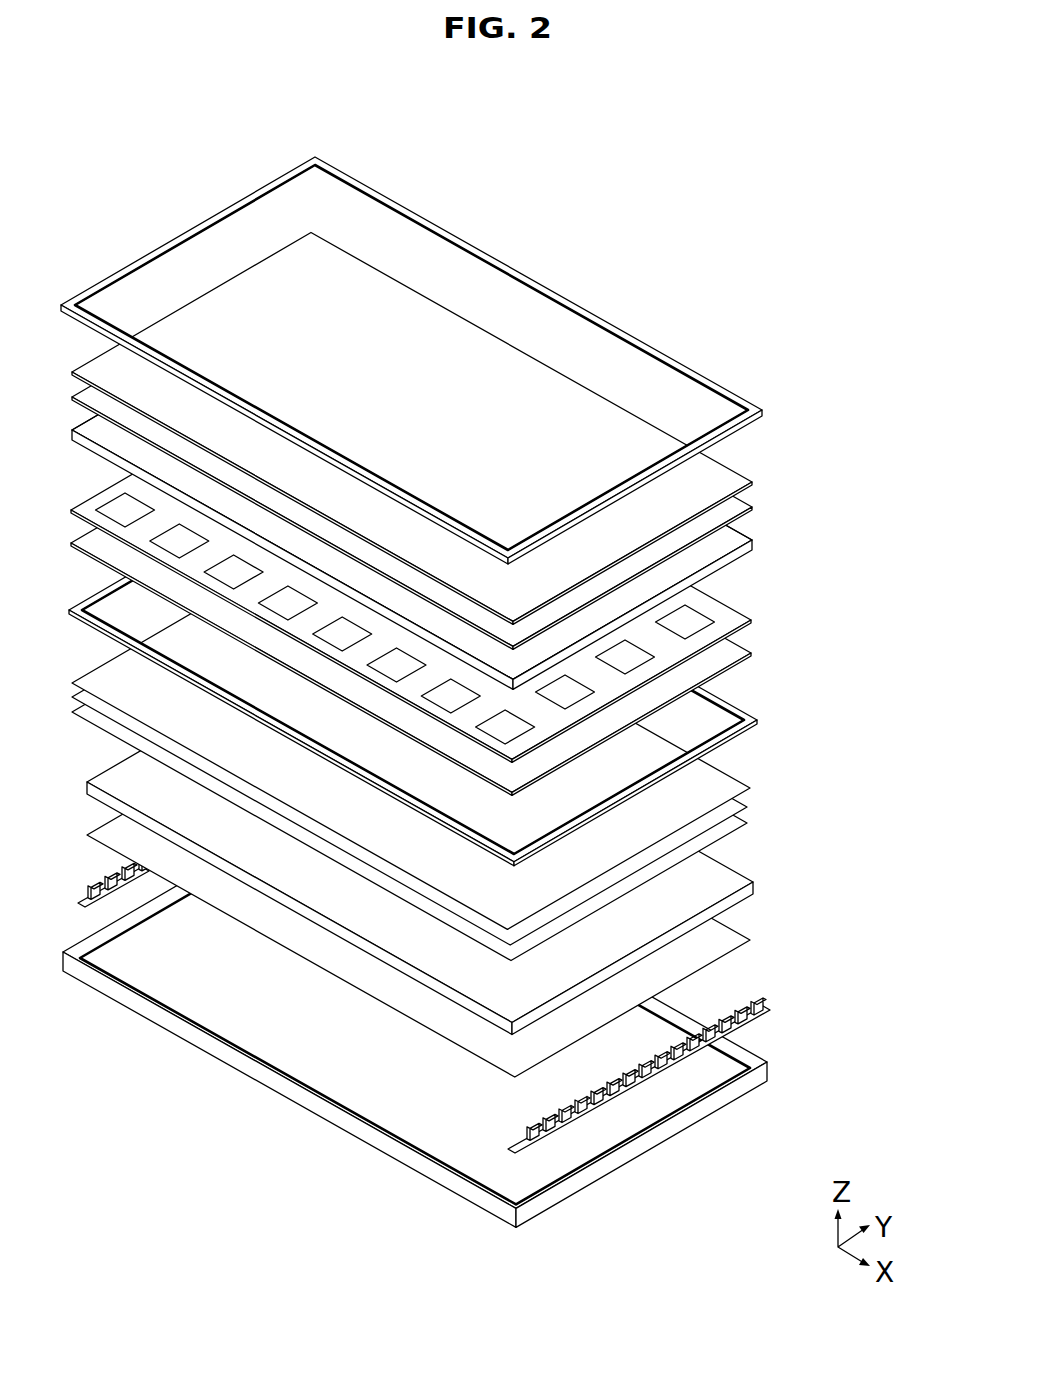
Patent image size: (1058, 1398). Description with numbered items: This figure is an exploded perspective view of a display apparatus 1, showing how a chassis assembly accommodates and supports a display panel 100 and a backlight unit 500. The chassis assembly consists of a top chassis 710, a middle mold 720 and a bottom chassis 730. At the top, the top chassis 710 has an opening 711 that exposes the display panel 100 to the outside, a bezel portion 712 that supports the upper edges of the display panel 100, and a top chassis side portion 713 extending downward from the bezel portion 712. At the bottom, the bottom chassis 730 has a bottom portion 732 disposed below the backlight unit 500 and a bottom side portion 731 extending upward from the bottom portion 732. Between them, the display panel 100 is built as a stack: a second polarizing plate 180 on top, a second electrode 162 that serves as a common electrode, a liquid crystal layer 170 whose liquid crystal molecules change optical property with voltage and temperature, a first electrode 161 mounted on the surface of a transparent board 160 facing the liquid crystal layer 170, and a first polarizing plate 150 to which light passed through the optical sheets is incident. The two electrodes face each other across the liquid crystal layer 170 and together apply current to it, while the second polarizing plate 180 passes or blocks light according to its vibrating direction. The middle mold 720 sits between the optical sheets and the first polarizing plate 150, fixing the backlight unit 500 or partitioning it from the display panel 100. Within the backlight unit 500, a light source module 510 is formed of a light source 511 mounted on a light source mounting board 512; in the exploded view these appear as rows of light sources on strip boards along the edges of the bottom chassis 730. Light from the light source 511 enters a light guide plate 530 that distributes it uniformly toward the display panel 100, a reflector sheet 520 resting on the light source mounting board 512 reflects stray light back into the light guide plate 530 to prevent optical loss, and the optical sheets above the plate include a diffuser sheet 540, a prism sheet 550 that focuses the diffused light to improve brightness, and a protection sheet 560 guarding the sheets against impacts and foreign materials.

The display apparatus 1 is at (620, 165).
The display panel 100 is at (500, 514).
The first polarizing plate 150 is at (740, 653).
The board 160 is at (453, 567).
The first electrode 161 is at (695, 623).
The second electrode 162 is at (743, 502).
The liquid crystal layer 170 is at (750, 543).
The second polarizing plate 180 is at (453, 429).
The backlight unit 500 is at (504, 847).
The light source module 510 is at (466, 1003).
The light source 511 is at (762, 1013).
The light source mounting board 512 is at (755, 1027).
The reflector sheet 520 is at (750, 938).
The light guide plate 530 is at (753, 884).
The diffuser sheet 540 is at (747, 823).
The prism sheet 550 is at (747, 806).
The protection sheet 560 is at (453, 736).
The top chassis 710 is at (463, 360).
The opening 711 is at (684, 390).
The bezel portion 712 is at (752, 403).
The top chassis side portion 713 is at (750, 427).
The middle mold 720 is at (755, 710).
The bottom chassis 730 is at (466, 1017).
The bottom side portion 731 is at (663, 1132).
The bottom portion 732 is at (555, 1155).